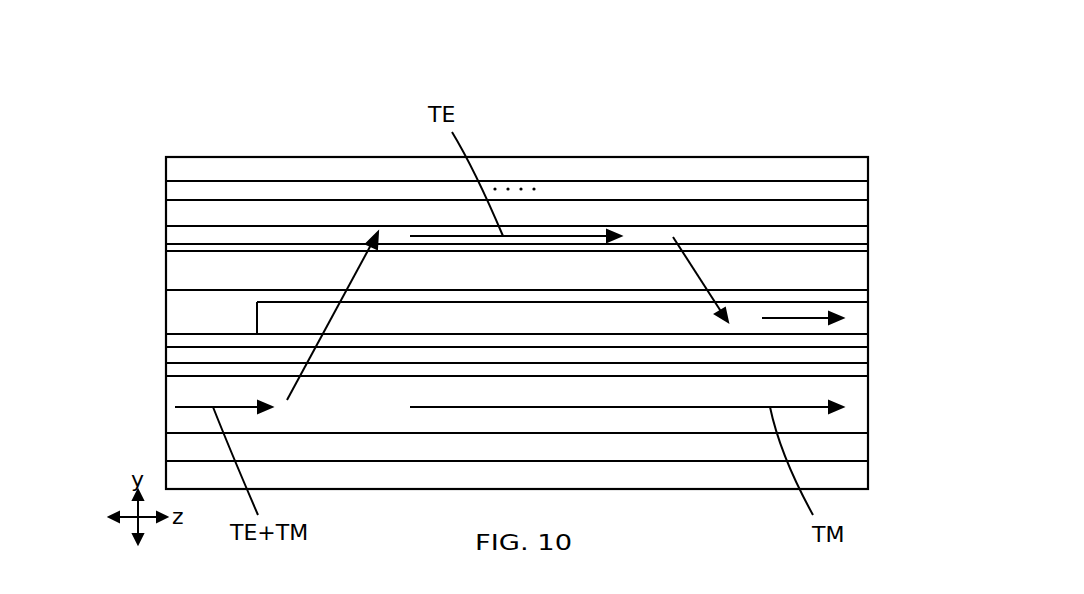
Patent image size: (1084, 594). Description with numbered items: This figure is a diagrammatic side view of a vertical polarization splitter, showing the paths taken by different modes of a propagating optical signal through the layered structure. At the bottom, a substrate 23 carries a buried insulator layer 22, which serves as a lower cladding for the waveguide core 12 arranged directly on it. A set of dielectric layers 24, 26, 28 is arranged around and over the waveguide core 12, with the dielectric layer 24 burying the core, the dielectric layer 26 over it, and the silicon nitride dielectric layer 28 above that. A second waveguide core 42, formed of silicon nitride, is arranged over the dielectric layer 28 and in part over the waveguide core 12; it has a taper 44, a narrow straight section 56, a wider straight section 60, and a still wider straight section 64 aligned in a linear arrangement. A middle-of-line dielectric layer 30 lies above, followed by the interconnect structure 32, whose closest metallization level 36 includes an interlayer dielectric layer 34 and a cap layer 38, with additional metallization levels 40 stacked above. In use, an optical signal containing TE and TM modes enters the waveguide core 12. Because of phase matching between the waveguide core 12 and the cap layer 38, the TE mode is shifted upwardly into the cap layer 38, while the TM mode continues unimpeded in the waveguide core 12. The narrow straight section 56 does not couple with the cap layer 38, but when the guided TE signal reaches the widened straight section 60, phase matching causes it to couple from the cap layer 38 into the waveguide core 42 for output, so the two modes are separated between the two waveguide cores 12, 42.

The waveguide core 12 is at (855, 405).
The buried insulator layer 22 is at (178, 451).
The substrate 23 is at (855, 477).
The dielectric layer 24 is at (178, 371).
The dielectric layer 26 is at (855, 355).
The dielectric layer 28 is at (178, 341).
The dielectric layer 30 is at (178, 311).
The interconnect structure 32 is at (874, 172).
The interlayer dielectric layer 34 is at (855, 270).
The metallization level 36 is at (148, 225).
The cap layer 38 is at (855, 234).
The additional metallization levels 40 is at (148, 157).
The waveguide core 42 is at (855, 314).
The taper 44 is at (262, 118).
The straight section 56 is at (535, 93).
The straight section 60 is at (703, 131).
The straight section 64 is at (862, 120).